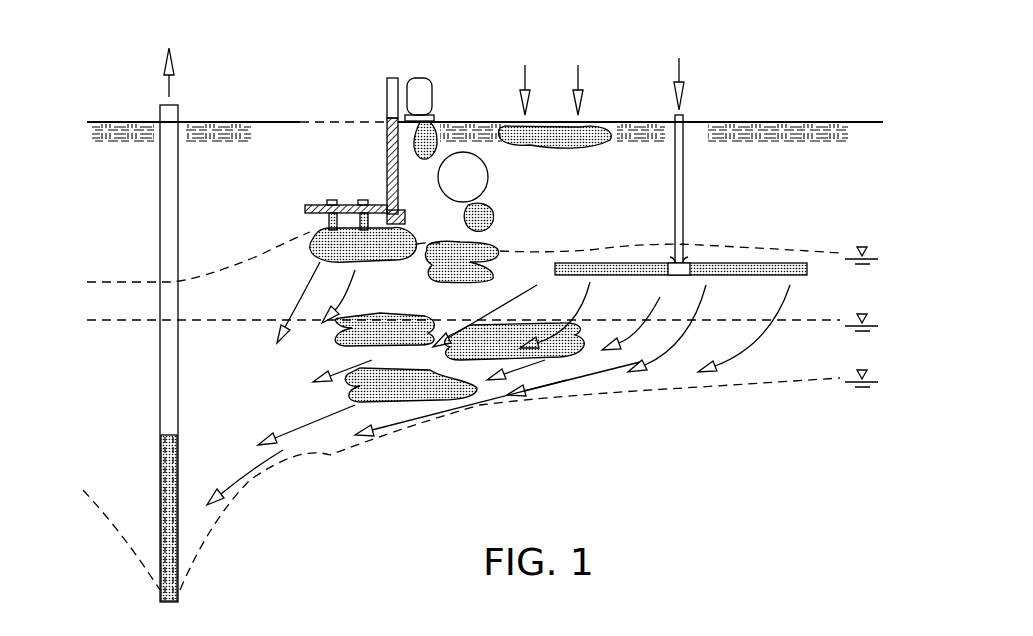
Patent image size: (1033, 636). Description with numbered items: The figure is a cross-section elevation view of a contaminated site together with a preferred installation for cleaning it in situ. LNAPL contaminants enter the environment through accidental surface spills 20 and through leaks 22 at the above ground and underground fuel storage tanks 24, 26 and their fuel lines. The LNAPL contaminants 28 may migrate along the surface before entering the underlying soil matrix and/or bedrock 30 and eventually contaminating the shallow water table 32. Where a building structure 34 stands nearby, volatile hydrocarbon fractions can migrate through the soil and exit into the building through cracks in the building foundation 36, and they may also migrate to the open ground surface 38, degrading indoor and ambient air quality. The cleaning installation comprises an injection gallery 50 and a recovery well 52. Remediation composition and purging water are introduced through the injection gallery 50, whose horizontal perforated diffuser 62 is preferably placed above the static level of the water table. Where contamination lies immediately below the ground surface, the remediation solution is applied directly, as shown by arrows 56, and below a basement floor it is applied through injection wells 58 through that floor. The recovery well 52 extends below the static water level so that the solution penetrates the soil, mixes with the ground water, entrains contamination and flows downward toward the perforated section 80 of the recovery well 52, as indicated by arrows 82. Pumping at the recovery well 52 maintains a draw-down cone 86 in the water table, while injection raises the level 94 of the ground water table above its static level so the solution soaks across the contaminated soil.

The accidental surface spills 20 is at (592, 141).
The leaks 22 is at (432, 133).
The fuel storage tank 24 is at (425, 87).
The fuel storage tank 26 is at (488, 176).
The LNAPL contaminants 28 is at (420, 314).
The soil matrix and/or bedrock 30 is at (822, 206).
The shallow water table 32 is at (874, 318).
The building structure 34 is at (387, 100).
The building foundation 36 is at (387, 200).
The open ground surface 38 is at (212, 121).
The injection gallery 50 is at (683, 137).
The recovery well 52 is at (160, 112).
The arrows 56 is at (578, 78).
The injection wells 58 is at (362, 200).
The horizontal perforated diffuser 62 is at (735, 262).
The perforated section 80 is at (160, 468).
The arrows 82 is at (305, 425).
The draw-down cone 86 is at (876, 376).
The level of the ground water table 94 is at (872, 250).